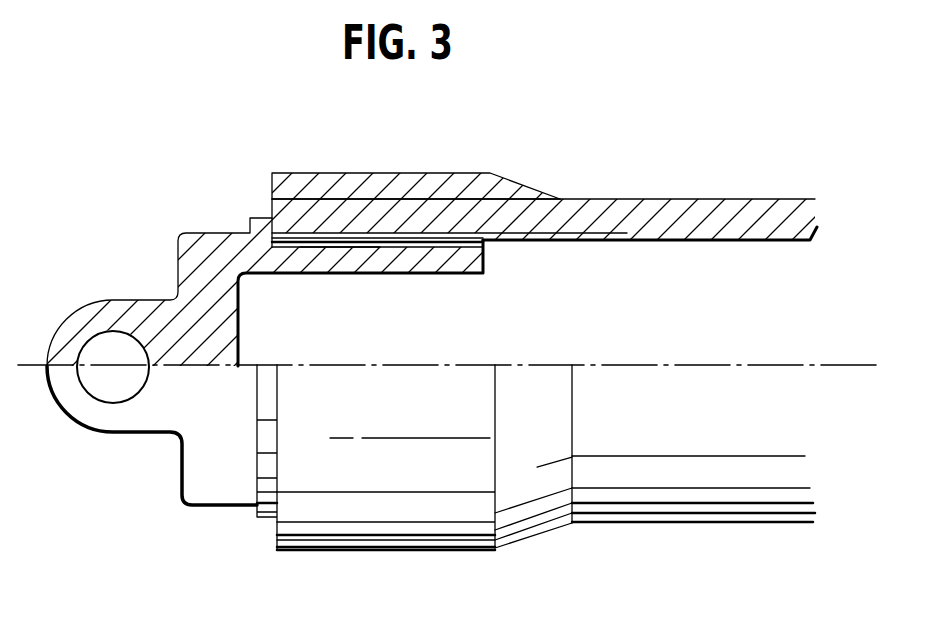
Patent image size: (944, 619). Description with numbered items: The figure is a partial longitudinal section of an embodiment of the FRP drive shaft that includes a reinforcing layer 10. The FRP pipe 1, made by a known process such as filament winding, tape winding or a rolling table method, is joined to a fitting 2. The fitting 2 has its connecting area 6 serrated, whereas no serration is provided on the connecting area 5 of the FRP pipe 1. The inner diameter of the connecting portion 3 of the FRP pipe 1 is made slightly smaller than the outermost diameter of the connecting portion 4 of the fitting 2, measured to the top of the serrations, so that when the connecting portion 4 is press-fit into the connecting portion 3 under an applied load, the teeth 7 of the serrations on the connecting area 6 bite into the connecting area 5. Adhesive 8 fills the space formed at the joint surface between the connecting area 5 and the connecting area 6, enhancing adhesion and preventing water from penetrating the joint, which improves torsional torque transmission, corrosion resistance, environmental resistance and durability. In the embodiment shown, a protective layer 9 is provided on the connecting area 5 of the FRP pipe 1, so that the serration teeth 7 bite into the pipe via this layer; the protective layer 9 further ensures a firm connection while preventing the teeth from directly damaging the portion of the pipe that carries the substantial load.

The FRP pipe 1 is at (695, 212).
The fitting 2 is at (177, 262).
The connecting portion of FRP pipe 3 is at (452, 200).
The connecting portion of fitting 4 is at (463, 262).
The connecting area of FRP pipe 5 is at (385, 232).
The connecting area of fitting 6 is at (375, 248).
The teeth 7 is at (338, 248).
The adhesive 8 is at (473, 268).
The protective layer 9 is at (573, 240).
The reinforcing layer 10 is at (335, 183).